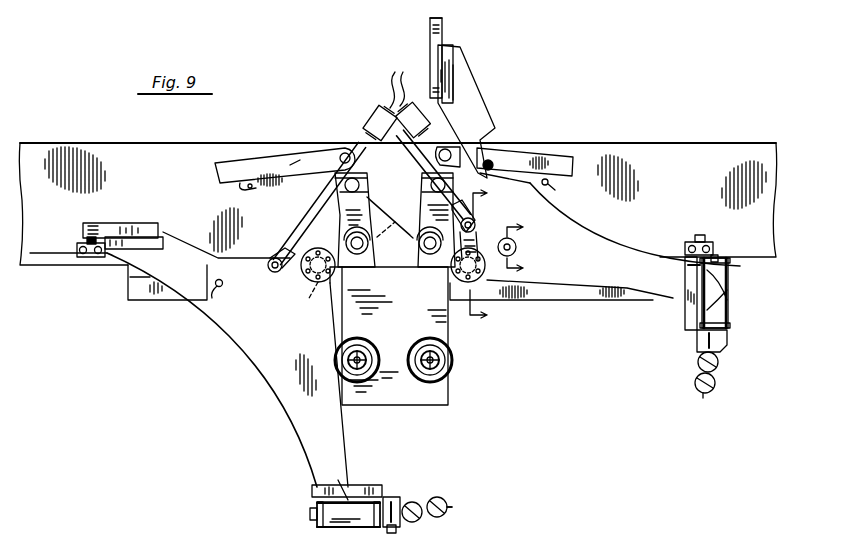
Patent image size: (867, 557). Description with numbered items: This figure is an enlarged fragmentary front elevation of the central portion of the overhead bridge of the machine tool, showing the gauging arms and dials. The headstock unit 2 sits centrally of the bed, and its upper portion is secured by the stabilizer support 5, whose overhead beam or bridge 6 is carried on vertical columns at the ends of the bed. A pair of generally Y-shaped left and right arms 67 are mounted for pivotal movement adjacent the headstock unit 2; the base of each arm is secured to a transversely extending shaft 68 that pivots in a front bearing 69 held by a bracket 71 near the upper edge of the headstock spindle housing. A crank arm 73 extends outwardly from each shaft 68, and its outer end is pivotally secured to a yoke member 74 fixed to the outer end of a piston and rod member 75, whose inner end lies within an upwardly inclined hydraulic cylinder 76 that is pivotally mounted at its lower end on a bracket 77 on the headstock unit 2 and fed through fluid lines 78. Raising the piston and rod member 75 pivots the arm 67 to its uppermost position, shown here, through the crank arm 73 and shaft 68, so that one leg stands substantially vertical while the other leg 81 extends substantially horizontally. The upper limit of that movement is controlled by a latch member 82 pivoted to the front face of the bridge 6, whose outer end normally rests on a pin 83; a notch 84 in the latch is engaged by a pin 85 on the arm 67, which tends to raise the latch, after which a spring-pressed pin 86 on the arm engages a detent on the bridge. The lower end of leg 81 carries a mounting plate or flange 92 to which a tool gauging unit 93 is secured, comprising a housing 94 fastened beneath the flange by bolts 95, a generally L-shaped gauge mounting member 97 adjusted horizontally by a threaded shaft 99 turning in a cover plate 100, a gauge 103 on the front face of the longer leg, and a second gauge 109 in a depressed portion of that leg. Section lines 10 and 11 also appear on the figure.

The headstock unit 2 is at (450, 387).
The stabilizer support 5 is at (701, 122).
The overhead beam or bridge 6 is at (602, 150).
The section line 10 is at (494, 254).
The section line 11 is at (528, 248).
The arm 67 is at (280, 393).
The shaft 68 is at (301, 296).
The front bearing 69 is at (325, 282).
The bracket 71 is at (342, 287).
The crank arm 73 is at (290, 288).
The yoke member 74 is at (274, 258).
The piston and rod member 75 is at (330, 212).
The hydraulic cylinder 76 is at (368, 125).
The bracket 77 is at (418, 212).
The lines 78 is at (406, 84).
The leg 81 is at (665, 300).
The latch member 82 is at (275, 160).
The pin 83 is at (565, 190).
The notch 84 is at (310, 165).
The pin 85 is at (212, 298).
The spring-pressed pin 86 is at (517, 246).
The mounting plate or flange 92 is at (690, 330).
The tool gauging unit 93 is at (426, 488).
The housing 94 is at (356, 528).
The bolts 95 is at (728, 296).
The gauge mounting member 97 is at (392, 497).
The threaded shaft 99 is at (720, 258).
The cover plate 100 is at (690, 272).
The gauge 103 is at (397, 530).
The second gauge 109 is at (445, 510).